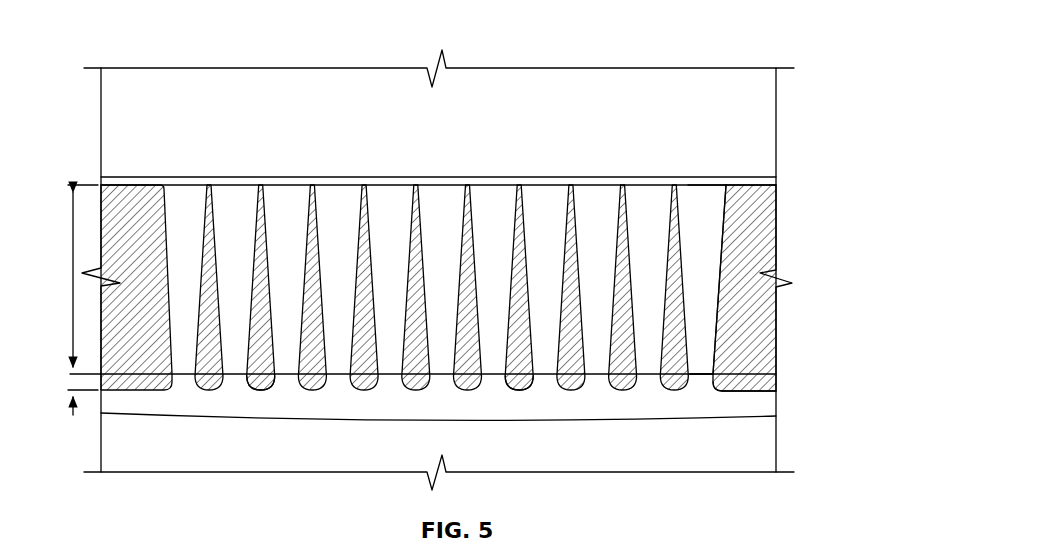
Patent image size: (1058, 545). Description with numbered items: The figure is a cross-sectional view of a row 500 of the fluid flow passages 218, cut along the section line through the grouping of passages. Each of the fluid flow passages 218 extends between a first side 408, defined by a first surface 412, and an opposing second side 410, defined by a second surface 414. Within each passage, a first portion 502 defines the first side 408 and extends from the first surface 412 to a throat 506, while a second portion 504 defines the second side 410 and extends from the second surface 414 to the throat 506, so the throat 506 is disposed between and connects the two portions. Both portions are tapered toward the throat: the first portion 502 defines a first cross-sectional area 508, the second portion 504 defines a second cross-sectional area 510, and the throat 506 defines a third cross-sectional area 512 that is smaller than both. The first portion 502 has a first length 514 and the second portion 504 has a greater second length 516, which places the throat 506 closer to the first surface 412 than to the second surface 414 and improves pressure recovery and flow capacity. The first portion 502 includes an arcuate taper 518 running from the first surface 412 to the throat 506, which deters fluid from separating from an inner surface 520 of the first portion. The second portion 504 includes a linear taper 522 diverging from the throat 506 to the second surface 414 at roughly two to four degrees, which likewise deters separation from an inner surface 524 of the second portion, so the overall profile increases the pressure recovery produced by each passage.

The fluid flow passages 218 is at (594, 57).
The first side 408 is at (194, 440).
The second side 410 is at (205, 85).
The first surface 412 is at (765, 392).
The second surface 414 is at (761, 184).
The row 500 is at (128, 163).
The first portion 502 is at (720, 382).
The second portion 504 is at (735, 268).
The throat 506 is at (714, 370).
The first cross-sectional area 508 is at (702, 388).
The second cross-sectional area 510 is at (707, 181).
The third cross-sectional area 512 is at (702, 355).
The first length 514 is at (69, 383).
The second length 516 is at (72, 274).
The arcuate taper 518 is at (265, 387).
The inner surface 520 is at (515, 387).
The linear taper 522 is at (310, 235).
The inner surface 524 is at (513, 235).